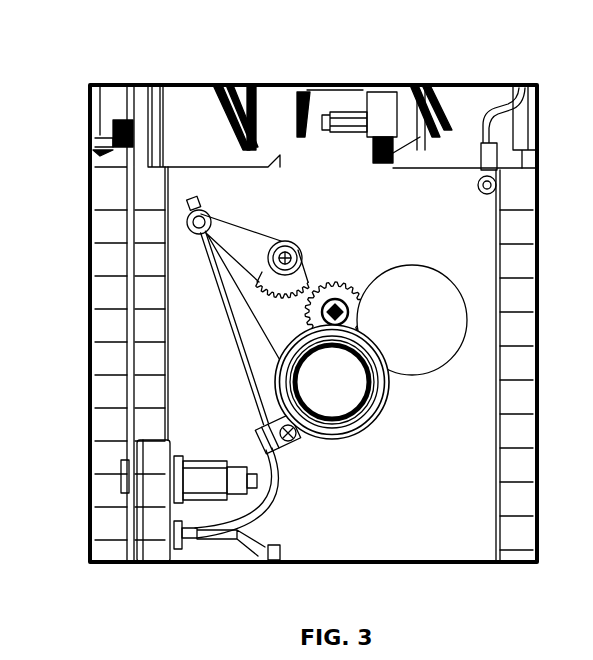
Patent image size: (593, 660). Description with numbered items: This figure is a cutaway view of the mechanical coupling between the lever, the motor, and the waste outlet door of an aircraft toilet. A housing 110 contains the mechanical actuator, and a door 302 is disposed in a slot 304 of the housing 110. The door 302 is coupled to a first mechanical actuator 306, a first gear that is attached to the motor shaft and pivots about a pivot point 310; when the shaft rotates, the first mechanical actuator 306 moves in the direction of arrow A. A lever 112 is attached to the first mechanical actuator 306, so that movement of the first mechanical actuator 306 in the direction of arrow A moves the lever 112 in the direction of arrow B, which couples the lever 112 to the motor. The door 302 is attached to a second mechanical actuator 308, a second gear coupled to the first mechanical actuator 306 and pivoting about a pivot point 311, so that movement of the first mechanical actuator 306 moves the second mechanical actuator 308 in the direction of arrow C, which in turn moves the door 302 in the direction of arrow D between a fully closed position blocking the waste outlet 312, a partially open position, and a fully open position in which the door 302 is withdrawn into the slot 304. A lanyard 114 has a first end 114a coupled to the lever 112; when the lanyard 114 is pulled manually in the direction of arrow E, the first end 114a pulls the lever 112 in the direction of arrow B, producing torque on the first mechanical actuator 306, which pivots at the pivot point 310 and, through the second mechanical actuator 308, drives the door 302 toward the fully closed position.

The housing 110 is at (470, 248).
The lever 112 is at (283, 254).
The lanyard 114 is at (237, 350).
The first end 114a is at (187, 213).
The door 302 is at (420, 264).
The slot 304 is at (423, 382).
The first mechanical actuator 306 is at (313, 270).
The second mechanical actuator 308 is at (312, 306).
The pivot point 310 is at (250, 150).
The pivot point 311 is at (347, 293).
The waste outlet 312 is at (333, 440).
The arrow A is at (281, 302).
The arrow B is at (176, 197).
The arrow C is at (337, 273).
The arrow D is at (397, 395).
The arrow E is at (210, 290).